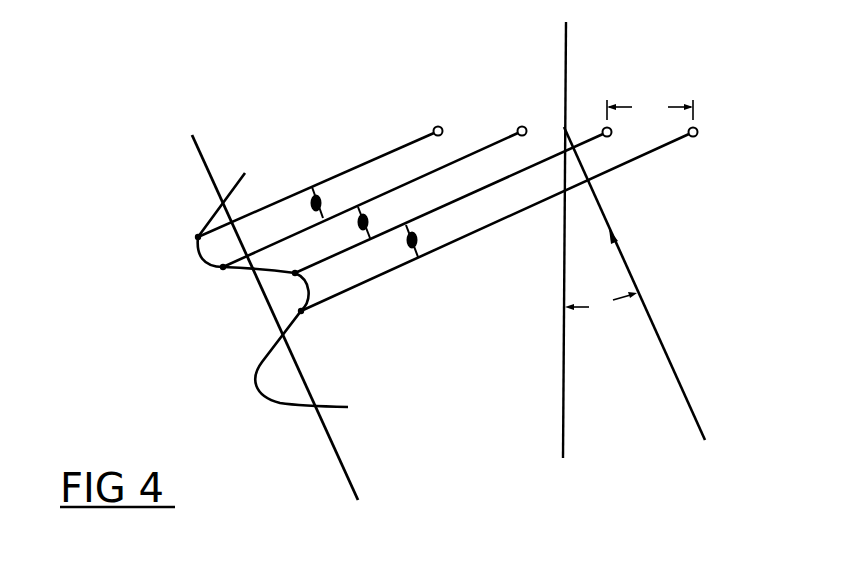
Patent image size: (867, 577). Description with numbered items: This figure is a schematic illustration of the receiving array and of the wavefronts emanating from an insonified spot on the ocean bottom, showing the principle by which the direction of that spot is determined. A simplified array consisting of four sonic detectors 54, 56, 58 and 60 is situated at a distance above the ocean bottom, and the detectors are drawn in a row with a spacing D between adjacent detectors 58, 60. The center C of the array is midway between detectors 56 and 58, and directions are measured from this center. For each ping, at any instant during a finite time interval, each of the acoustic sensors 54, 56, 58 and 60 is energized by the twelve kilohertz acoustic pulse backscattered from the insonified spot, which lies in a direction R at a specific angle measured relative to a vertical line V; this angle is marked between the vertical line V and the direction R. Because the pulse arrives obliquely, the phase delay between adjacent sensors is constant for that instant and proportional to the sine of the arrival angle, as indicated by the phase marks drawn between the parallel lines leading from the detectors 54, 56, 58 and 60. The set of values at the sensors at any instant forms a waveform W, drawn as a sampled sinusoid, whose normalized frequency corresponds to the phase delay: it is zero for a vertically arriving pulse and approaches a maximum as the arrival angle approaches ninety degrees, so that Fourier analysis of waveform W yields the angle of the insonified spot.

The sonic detector 54 is at (437, 126).
The sonic detector 56 is at (521, 126).
The sonic detector 58 is at (603, 128).
The sonic detector 60 is at (698, 132).
The waveform W is at (264, 361).
The vertical line V is at (566, 378).
The direction R is at (670, 357).
The center of the array C is at (566, 129).
The beam spacing distance D is at (650, 109).